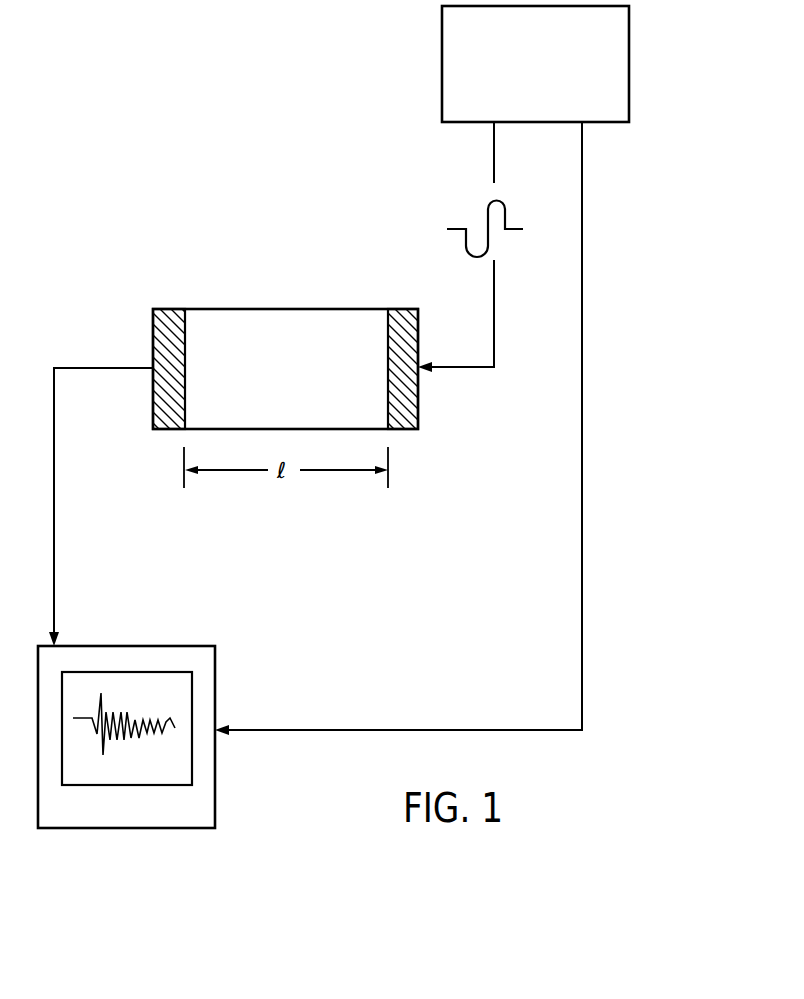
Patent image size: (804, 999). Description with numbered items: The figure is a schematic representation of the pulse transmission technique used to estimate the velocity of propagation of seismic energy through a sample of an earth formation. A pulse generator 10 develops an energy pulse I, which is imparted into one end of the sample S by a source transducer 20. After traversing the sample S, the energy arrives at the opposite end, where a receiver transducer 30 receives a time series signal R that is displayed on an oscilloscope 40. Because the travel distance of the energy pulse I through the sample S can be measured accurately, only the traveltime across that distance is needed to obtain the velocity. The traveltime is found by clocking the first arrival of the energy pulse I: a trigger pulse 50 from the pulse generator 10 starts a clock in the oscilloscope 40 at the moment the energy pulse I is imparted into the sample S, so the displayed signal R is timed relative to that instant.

The pulse generator 10 is at (629, 30).
The source transducer 20 is at (418, 411).
The receiver transducer 30 is at (172, 430).
The oscilloscope 40 is at (215, 789).
The trigger pulse 50 is at (582, 418).
The sample S is at (223, 307).
The energy pulse I is at (442, 206).
The time series signal R is at (181, 702).